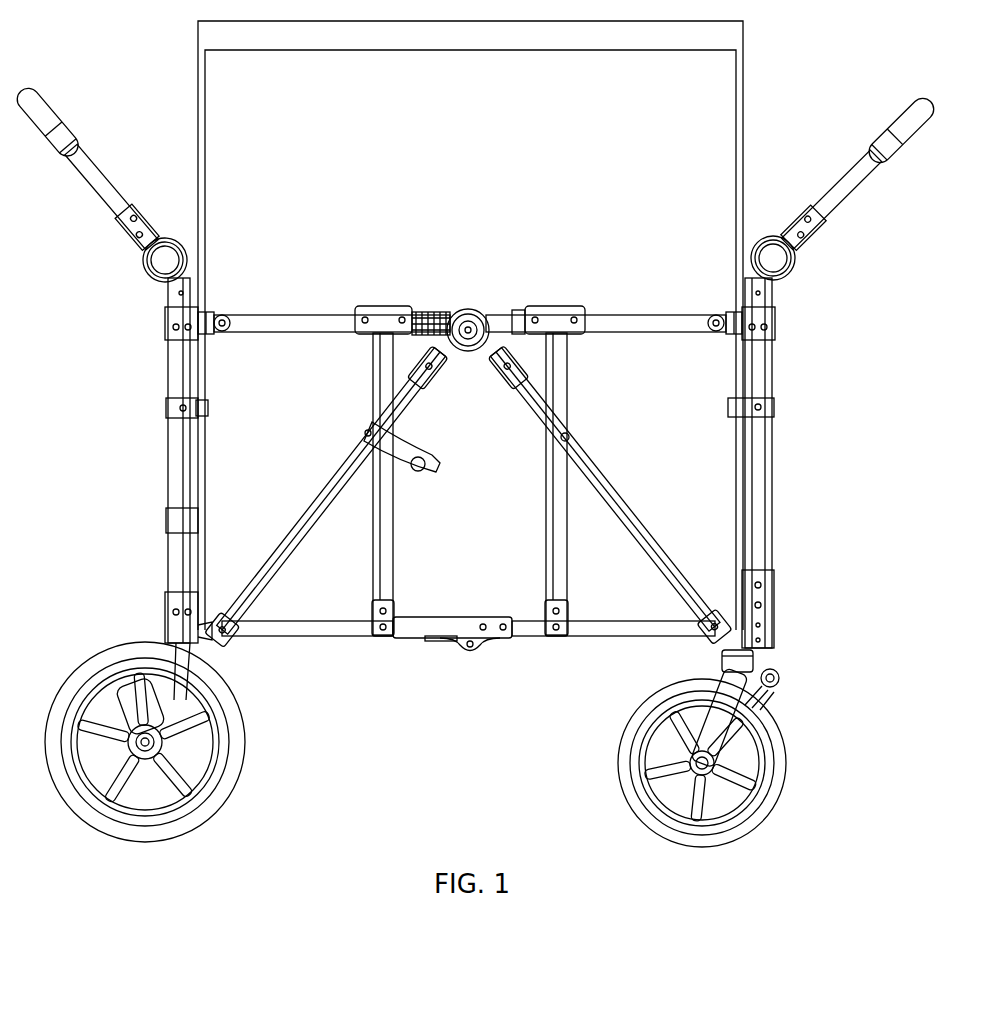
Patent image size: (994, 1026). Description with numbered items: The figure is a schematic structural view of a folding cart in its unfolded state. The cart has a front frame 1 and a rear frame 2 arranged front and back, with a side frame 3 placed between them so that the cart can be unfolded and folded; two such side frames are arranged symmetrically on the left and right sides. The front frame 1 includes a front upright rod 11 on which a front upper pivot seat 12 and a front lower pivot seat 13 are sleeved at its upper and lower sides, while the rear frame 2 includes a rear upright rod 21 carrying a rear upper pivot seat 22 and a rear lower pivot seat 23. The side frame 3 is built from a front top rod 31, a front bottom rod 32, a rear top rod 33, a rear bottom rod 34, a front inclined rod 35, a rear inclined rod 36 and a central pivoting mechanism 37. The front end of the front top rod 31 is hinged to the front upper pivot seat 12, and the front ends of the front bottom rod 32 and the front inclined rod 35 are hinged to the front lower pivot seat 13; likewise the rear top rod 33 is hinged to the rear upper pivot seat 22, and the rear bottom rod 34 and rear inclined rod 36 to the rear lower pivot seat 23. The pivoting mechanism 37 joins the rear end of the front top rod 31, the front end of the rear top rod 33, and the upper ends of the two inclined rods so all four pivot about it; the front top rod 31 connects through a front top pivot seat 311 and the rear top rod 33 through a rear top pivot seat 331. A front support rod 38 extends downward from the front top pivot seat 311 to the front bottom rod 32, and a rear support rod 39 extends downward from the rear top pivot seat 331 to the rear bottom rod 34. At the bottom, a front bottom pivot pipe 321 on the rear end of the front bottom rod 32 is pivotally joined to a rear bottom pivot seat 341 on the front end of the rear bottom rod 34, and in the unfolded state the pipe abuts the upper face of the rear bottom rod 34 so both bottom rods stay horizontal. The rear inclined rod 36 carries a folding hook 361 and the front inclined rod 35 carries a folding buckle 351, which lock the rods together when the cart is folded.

The front frame 1 is at (845, 387).
The front upright rod 11 is at (757, 508).
The front upper pivot seat 12 is at (768, 338).
The front lower pivot seat 13 is at (772, 600).
The rear frame 2 is at (93, 373).
The rear upright rod 21 is at (178, 487).
The rear upper pivot seat 22 is at (170, 320).
The rear lower pivot seat 23 is at (185, 612).
The side frame 3 is at (530, 205).
The front top rod 31 is at (647, 313).
The front top pivot seat 311 is at (560, 322).
The front bottom rod 32 is at (598, 638).
The front bottom pivot pipe 321 is at (494, 640).
The rear top rod 33 is at (318, 313).
The rear top pivot seat 331 is at (375, 322).
The rear bottom rod 34 is at (318, 638).
The rear bottom pivot seat 341 is at (440, 644).
The front inclined rod 35 is at (622, 510).
The folding buckle 351 is at (562, 441).
The rear inclined rod 36 is at (310, 522).
The folding hook 361 is at (415, 477).
The pivoting mechanism 37 is at (476, 312).
The front support rod 38 is at (560, 368).
The rear support rod 39 is at (382, 368).